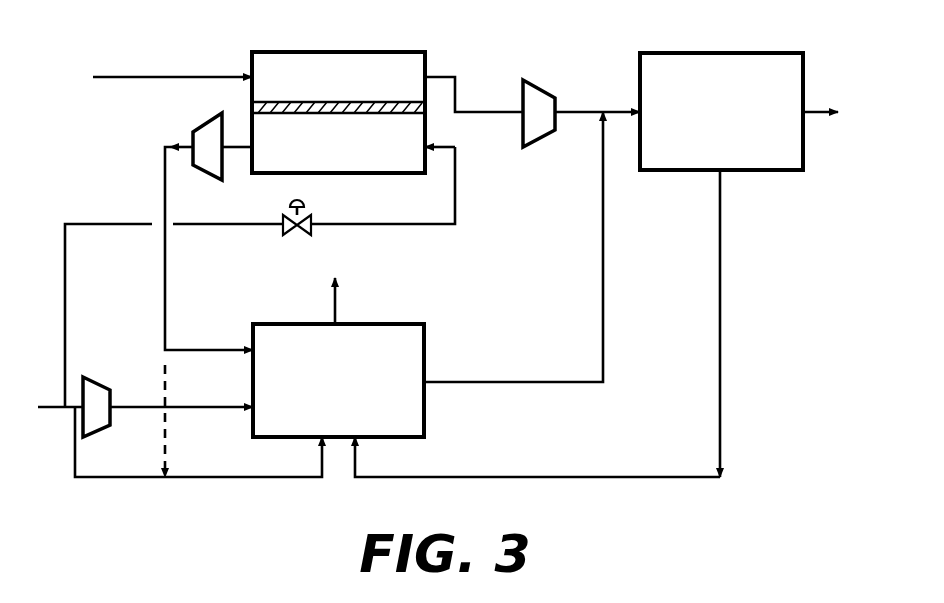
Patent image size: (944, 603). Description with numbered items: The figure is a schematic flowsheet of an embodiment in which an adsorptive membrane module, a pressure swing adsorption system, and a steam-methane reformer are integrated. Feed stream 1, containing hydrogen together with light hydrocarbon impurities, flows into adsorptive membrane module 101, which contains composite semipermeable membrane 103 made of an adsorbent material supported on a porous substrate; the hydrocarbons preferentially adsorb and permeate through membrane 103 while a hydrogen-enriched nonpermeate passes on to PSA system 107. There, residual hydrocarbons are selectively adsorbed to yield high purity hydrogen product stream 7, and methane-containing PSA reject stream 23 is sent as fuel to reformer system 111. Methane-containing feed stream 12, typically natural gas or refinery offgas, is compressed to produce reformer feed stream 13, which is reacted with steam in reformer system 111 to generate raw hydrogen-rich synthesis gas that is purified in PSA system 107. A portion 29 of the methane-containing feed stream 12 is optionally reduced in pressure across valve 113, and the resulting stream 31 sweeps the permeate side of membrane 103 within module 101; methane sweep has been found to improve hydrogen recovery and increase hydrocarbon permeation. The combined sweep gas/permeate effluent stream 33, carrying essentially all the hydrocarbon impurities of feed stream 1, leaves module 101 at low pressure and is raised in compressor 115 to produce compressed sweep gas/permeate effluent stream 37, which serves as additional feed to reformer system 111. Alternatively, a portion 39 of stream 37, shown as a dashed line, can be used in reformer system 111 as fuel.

The feed stream 1 is at (168, 77).
The high purity hydrogen product stream 7 is at (809, 110).
The methane-containing feed stream 12 is at (56, 409).
The reformer feed stream 13 is at (185, 407).
The PSA reject stream 23 is at (720, 276).
The portion of reformer feed stream 29 is at (65, 315).
The sweep stream 31 is at (418, 224).
The combined sweep gas/permeate effluent stream 33 is at (236, 149).
The compressed sweep gas/permeate effluent stream 37 is at (165, 215).
The portion of compressed sweep gas/permeate effluent stream 39 is at (160, 376).
The adsorptive membrane module 101 is at (347, 52).
The composite semipermeable membrane 103 is at (334, 101).
The PSA system 107 is at (703, 124).
The reformer system 111 is at (317, 389).
The valve 113 is at (305, 210).
The compressor 115 is at (207, 180).